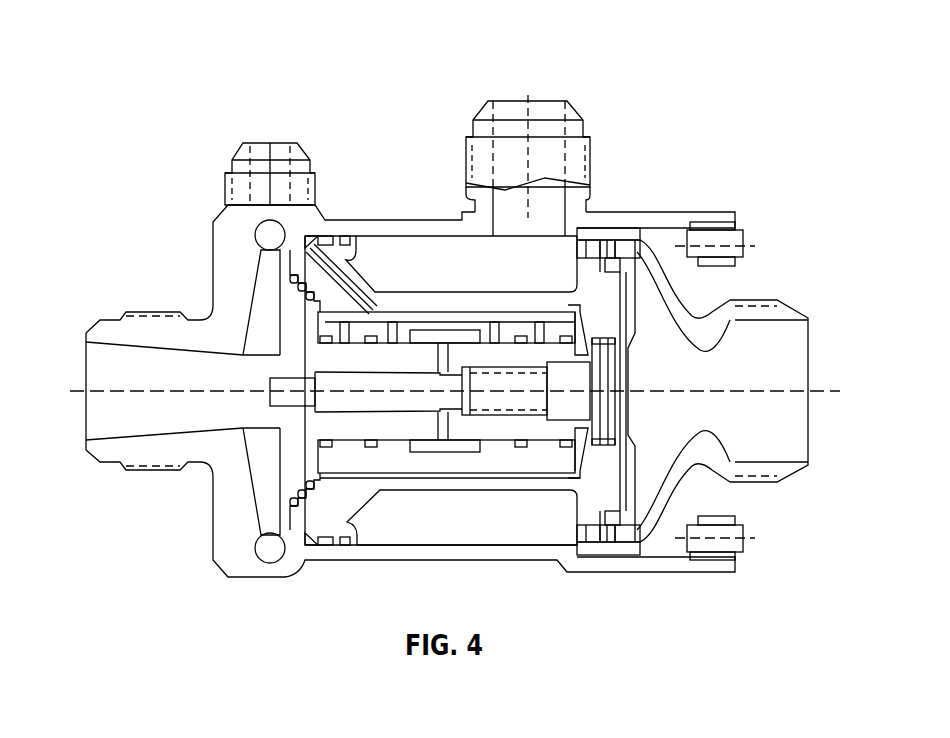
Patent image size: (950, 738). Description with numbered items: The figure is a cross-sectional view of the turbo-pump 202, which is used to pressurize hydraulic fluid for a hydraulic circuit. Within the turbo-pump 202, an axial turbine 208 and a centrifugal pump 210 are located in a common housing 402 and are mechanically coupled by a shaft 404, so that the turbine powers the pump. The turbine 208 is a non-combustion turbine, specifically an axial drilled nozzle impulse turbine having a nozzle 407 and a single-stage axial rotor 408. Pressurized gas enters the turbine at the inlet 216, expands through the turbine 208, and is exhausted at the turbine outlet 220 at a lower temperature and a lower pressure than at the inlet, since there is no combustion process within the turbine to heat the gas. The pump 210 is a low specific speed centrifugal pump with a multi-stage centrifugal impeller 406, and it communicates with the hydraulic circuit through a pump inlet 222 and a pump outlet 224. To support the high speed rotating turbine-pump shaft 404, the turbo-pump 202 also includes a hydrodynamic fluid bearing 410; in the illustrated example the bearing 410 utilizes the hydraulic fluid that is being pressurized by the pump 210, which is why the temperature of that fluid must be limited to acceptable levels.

The turbo-pump 202 is at (165, 40).
The axial turbine 208 is at (672, 335).
The centrifugal pump 210 is at (118, 245).
The inlet 216 is at (533, 72).
The turbine outlet 220 is at (754, 373).
The pump inlet 222 is at (142, 385).
The pump outlet 224 is at (278, 128).
The common housing 402 is at (362, 235).
The shaft 404 is at (460, 520).
The multi-stage centrifugal impeller 406 is at (262, 282).
The nozzle 407 is at (603, 250).
The single-stage axial rotor 408 is at (620, 262).
The hydrodynamic fluid bearing 410 is at (352, 458).